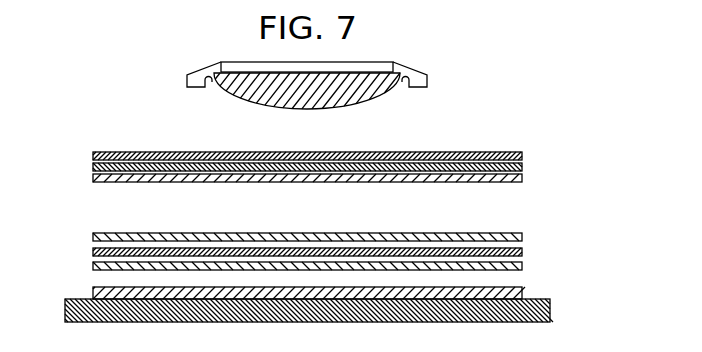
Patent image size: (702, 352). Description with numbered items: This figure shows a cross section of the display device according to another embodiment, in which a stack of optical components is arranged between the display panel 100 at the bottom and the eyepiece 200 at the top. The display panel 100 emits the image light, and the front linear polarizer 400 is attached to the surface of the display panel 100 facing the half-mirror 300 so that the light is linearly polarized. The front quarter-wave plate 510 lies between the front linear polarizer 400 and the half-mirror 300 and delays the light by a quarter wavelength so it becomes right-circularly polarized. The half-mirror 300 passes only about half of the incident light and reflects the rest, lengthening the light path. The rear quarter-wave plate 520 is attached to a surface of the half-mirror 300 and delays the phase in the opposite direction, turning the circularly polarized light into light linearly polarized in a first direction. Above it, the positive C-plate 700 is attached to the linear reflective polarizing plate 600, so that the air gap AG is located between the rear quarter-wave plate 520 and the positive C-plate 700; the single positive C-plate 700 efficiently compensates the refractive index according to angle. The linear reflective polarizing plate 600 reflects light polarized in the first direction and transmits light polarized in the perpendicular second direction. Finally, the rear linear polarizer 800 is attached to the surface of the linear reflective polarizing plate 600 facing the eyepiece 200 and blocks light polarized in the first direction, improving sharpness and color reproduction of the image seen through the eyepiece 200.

The eyepiece 200 is at (389, 88).
The rear linear polarizer 800 is at (522, 156).
The linear reflective polarizing plate 600 is at (522, 167).
The positive C-plate 700 is at (522, 178).
The air gap AG is at (120, 195).
The rear quarter-wave plate 520 is at (522, 237).
The half-mirror 300 is at (522, 252).
The front quarter-wave plate 510 is at (522, 266).
The front linear polarizer 400 is at (96, 291).
The display panel 100 is at (66, 310).